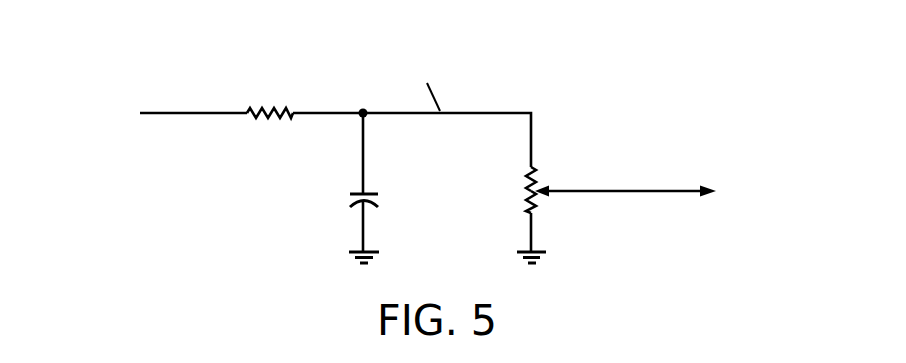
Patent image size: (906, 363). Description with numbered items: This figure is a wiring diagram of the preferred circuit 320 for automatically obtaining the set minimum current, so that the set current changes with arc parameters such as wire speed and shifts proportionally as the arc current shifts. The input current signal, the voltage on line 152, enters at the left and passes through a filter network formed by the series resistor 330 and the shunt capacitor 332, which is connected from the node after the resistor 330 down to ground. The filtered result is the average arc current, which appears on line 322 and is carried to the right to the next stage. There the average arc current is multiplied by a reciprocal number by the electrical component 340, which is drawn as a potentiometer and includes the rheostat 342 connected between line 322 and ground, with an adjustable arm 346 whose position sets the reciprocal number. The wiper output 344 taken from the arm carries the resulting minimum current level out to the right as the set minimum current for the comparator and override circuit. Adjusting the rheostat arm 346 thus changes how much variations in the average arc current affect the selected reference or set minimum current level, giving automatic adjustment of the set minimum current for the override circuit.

The line 152 is at (168, 116).
The minimum current adjustment circuit 320 is at (515, 81).
The line 322 is at (465, 117).
The resistor 330 is at (267, 107).
The capacitor 332 is at (352, 198).
The electrical component 340 is at (514, 195).
The rheostat 342 is at (537, 176).
The wiper output line IMIN 344 is at (632, 190).
The arm 346 is at (509, 206).